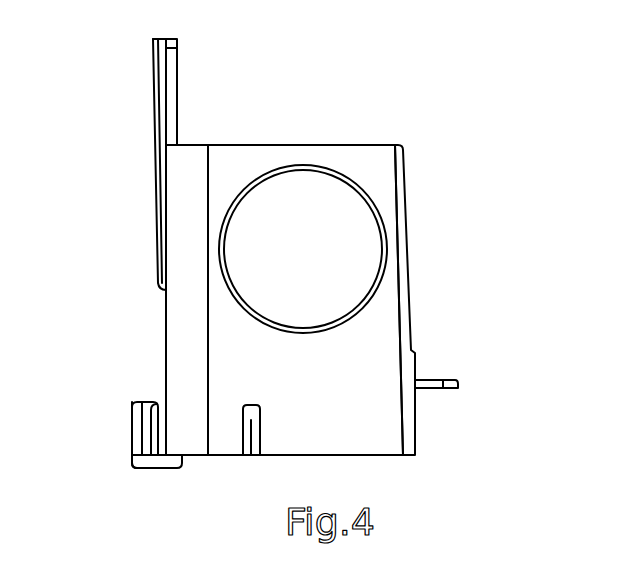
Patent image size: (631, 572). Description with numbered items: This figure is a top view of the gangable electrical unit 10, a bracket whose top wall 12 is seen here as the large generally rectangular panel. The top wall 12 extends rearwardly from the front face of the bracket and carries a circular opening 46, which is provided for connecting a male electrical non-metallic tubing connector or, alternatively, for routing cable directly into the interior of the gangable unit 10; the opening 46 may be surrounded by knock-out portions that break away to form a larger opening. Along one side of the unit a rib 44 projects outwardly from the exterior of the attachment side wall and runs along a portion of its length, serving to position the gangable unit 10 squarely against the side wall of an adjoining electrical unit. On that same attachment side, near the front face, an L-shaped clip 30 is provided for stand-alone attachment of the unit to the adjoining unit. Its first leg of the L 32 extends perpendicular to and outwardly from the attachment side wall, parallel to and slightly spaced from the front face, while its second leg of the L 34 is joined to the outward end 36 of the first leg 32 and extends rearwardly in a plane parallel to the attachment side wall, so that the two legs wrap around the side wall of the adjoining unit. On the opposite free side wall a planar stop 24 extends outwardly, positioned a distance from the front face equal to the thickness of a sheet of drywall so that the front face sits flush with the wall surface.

The gangable electrical unit 10 is at (467, 103).
The top wall 12 is at (378, 346).
The stop 24 is at (450, 388).
The clip 30 is at (128, 437).
The first leg of the L 32 is at (160, 466).
The second leg of the L 34 is at (132, 425).
The outward end of the first leg 36 is at (132, 459).
The rib 44 is at (158, 150).
The circular opening 46 is at (298, 205).